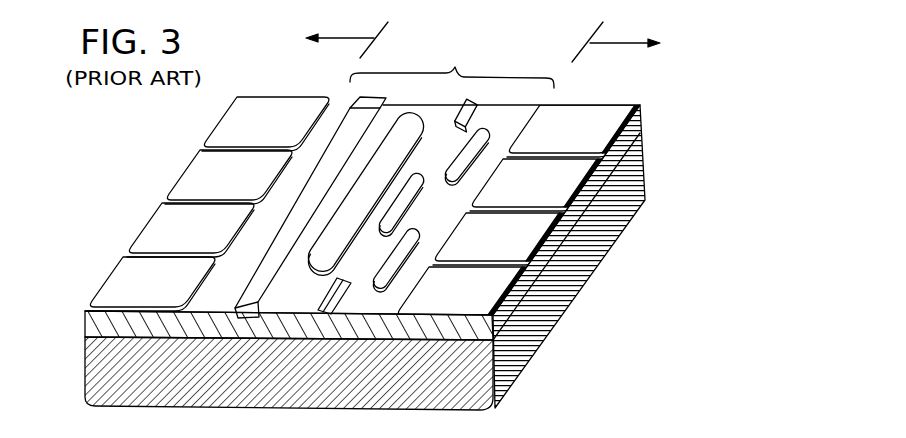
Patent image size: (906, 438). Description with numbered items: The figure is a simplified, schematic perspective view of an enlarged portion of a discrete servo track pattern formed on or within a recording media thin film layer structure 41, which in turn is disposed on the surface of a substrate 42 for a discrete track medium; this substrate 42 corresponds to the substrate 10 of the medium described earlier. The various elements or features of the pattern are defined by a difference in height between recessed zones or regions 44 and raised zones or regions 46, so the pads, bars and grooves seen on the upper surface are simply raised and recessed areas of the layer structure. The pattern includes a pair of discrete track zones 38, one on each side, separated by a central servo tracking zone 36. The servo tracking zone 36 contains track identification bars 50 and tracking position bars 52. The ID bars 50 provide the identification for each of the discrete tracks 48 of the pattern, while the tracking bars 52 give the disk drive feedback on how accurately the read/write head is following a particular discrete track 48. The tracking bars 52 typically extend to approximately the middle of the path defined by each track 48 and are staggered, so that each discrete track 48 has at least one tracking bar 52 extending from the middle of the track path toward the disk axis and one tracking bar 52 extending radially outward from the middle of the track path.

The substrate 10 is at (718, 23).
The servo tracking zone 36 is at (452, 67).
The discrete track zones 38 is at (483, 39).
The thin film layer structure 41 is at (88, 323).
The substrate 42 is at (88, 374).
The recessed zones 44 is at (447, 217).
The raised zones 46 is at (403, 292).
The discrete tracks 48 is at (573, 178).
The track identification bars 50 is at (402, 128).
The tracking position bars 52 is at (459, 177).